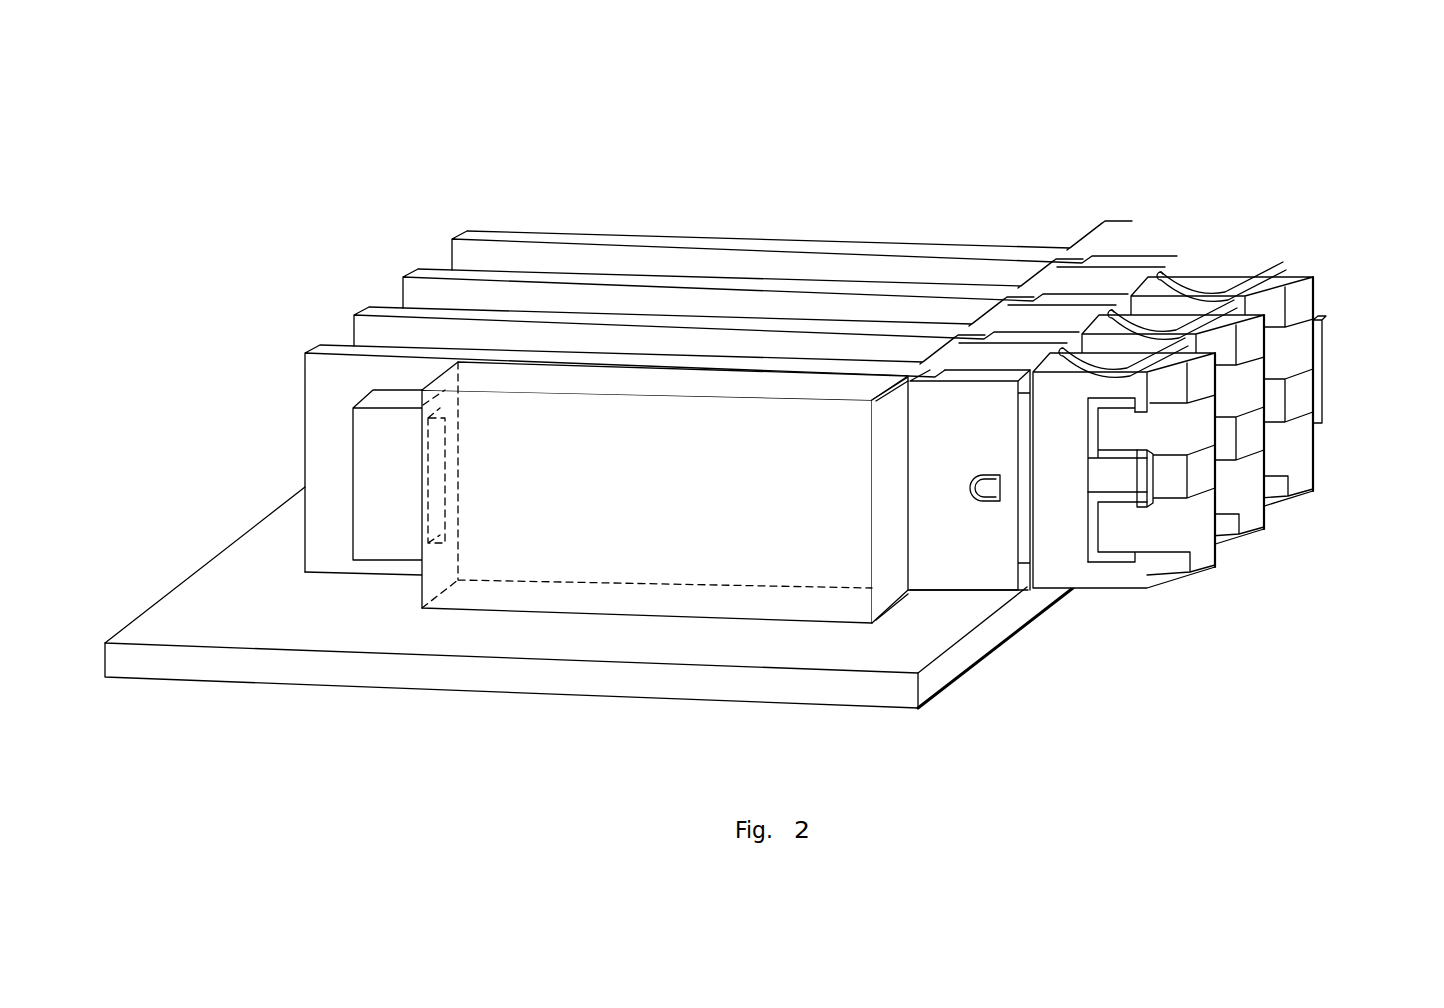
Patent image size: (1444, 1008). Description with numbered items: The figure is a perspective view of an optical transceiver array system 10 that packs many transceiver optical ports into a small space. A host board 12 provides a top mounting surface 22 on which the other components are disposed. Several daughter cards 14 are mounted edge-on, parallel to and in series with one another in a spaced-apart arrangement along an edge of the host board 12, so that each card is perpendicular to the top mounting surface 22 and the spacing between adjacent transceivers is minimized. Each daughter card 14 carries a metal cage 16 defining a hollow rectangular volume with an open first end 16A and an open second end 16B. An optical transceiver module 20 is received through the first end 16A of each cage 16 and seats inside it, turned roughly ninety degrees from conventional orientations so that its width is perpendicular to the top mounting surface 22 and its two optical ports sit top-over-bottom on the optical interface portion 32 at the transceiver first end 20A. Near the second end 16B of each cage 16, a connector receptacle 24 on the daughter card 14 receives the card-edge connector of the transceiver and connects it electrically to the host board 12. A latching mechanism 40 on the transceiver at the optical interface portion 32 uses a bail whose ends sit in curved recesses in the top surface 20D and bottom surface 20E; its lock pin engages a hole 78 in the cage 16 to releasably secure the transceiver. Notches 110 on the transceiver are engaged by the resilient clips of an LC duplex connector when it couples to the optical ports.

The optical transceiver array system 10 is at (533, 146).
The host board 12 is at (589, 614).
The daughter card 14 is at (461, 236).
The cage 16 is at (750, 496).
The first end of cage 16A is at (1006, 490).
The second end of cage 16B is at (424, 582).
The optical transceiver module 20 is at (1154, 413).
The first end of transceiver 20A is at (1305, 485).
The top surface of transceiver 20D is at (1114, 292).
The bottom surface of transceiver 20E is at (1127, 590).
The top mounting surface 22 is at (272, 621).
The connector receptacle 24 is at (380, 472).
The optical interface portion 32 is at (1063, 428).
The latching mechanism 40 is at (1342, 371).
The hole 78 is at (972, 488).
The notch 110 is at (1107, 406).